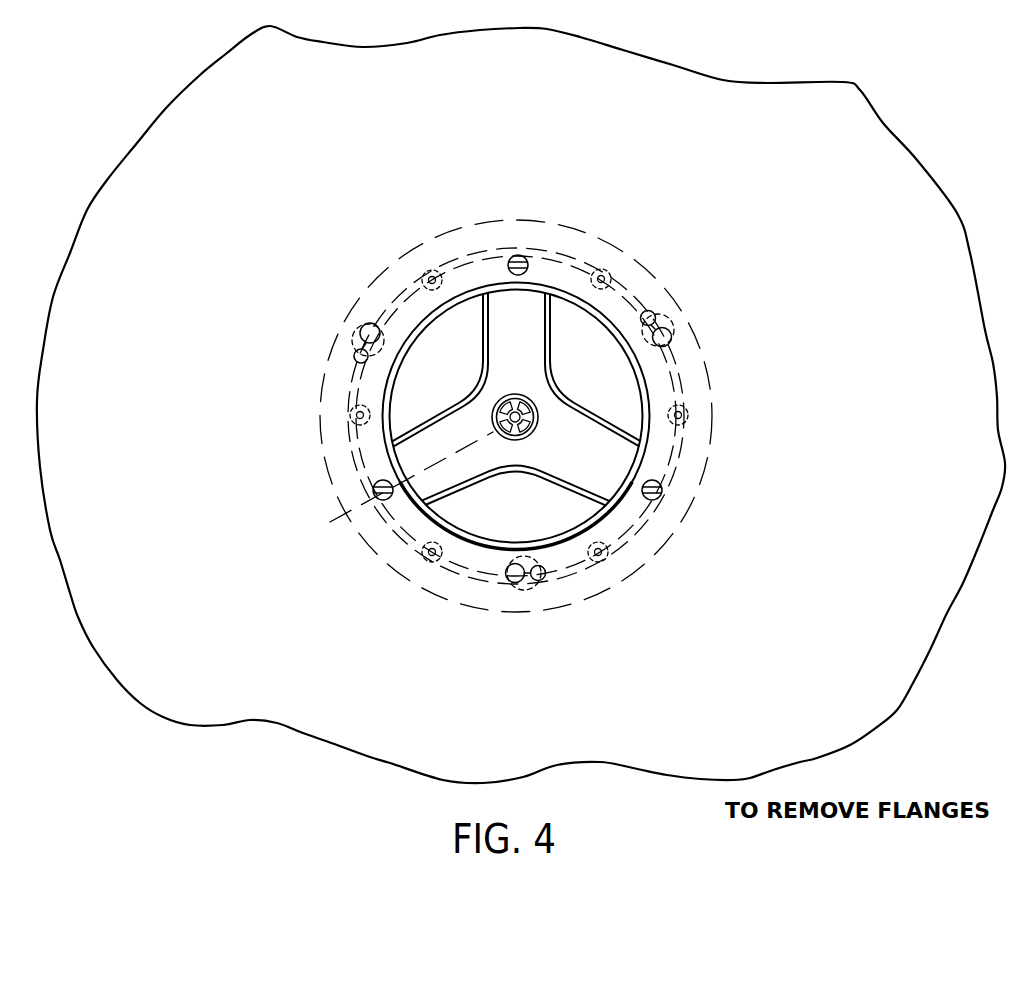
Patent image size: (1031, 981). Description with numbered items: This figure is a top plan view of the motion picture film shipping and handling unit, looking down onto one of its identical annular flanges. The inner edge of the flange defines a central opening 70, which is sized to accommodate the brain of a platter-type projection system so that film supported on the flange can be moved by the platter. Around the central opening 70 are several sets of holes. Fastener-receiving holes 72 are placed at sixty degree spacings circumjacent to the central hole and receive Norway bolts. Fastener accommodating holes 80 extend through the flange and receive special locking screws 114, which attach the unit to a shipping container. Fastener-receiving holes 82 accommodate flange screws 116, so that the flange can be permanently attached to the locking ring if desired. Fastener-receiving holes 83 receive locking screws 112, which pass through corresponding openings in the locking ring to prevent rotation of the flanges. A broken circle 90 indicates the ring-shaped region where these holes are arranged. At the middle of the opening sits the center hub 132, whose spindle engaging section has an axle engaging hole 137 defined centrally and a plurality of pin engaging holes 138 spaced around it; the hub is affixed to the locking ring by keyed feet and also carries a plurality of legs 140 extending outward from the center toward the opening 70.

The central opening 70 is at (603, 376).
The fastener-receiving holes 72 is at (666, 328).
The fastener accommodating holes 80 is at (605, 275).
The fastener-receiving holes 82 is at (521, 255).
The fastener-receiving holes 83 is at (426, 278).
The flange 90 is at (673, 452).
The locking screws 112 is at (436, 278).
The special locking screws 114 is at (352, 421).
The flange screws 116 is at (672, 493).
The center hub 132 is at (498, 440).
The axle engaging hole 137 is at (502, 400).
The pin engaging holes 138 is at (516, 397).
The legs 140 is at (350, 524).